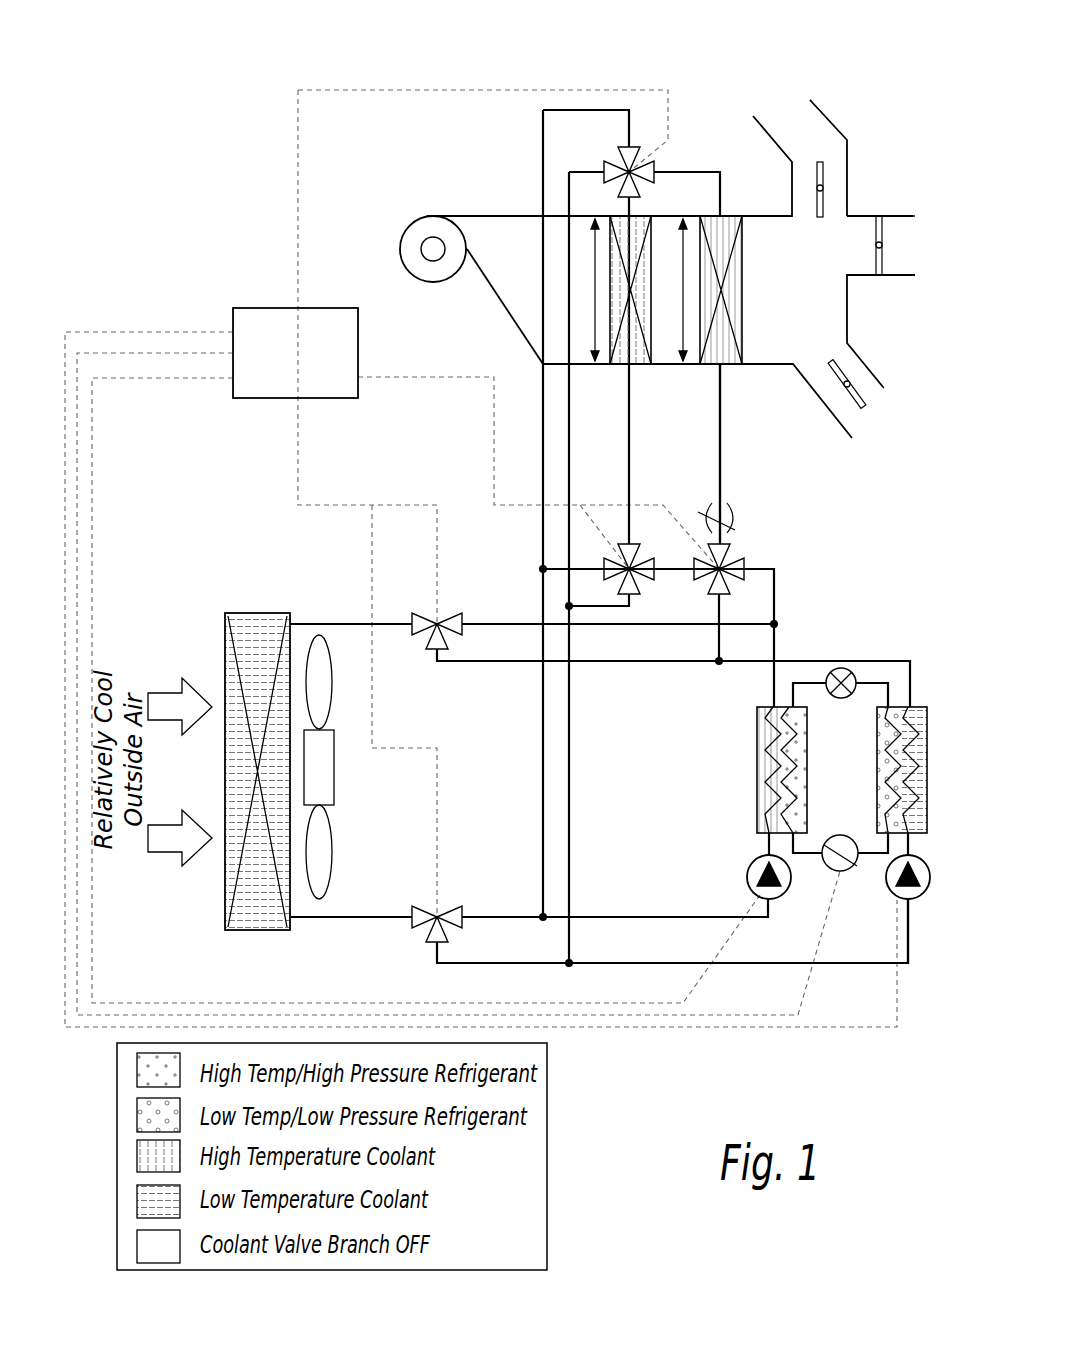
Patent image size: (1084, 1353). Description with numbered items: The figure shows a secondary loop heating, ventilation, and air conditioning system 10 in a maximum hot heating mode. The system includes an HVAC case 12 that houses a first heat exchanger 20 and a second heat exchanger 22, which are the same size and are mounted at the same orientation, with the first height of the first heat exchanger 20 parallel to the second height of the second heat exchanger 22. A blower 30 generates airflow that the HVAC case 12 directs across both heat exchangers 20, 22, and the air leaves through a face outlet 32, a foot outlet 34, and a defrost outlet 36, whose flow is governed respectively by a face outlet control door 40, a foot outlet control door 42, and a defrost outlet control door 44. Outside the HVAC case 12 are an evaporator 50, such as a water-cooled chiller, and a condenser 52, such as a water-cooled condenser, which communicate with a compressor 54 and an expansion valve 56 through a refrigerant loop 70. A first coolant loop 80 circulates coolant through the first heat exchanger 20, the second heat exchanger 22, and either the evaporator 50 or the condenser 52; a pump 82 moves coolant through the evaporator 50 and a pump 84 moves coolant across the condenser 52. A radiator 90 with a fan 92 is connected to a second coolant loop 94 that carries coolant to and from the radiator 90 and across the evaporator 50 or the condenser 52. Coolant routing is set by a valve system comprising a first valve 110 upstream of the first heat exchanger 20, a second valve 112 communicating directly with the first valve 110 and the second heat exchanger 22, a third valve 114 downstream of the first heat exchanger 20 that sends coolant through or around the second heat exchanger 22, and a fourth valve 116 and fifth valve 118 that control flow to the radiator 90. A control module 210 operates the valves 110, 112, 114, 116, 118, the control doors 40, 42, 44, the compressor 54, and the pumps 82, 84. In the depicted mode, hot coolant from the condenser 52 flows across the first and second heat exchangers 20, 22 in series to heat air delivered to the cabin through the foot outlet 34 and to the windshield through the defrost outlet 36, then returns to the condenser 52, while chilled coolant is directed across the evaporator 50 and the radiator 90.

The secondary loop HVAC system 10 is at (212, 143).
The HVAC case 12 is at (758, 210).
The first heat exchanger 20 is at (742, 300).
The second heat exchanger 22 is at (653, 253).
The blower 30 is at (402, 240).
The face outlet 32 is at (900, 222).
The foot outlet 34 is at (883, 387).
The defrost outlet 36 is at (810, 100).
The face outlet control door 40 is at (882, 245).
The foot outlet control door 42 is at (847, 390).
The defrost outlet control door 44 is at (820, 185).
The evaporator 50 is at (877, 818).
The condenser 52 is at (757, 770).
The compressor 54 is at (856, 868).
The expansion valve 56 is at (838, 698).
The refrigerant loop 70 is at (892, 882).
The first coolant loop 80 is at (722, 408).
The pump 82 is at (930, 890).
The pump 84 is at (785, 893).
The radiator 90 is at (222, 655).
The fan 92 is at (333, 852).
The second coolant loop 94 is at (352, 623).
The first valve 110 is at (719, 569).
The second valve 112 is at (629, 569).
The third valve 114 is at (629, 172).
The fourth valve 116 is at (437, 624).
The fifth valve 118 is at (437, 917).
The control module 210 is at (233, 308).